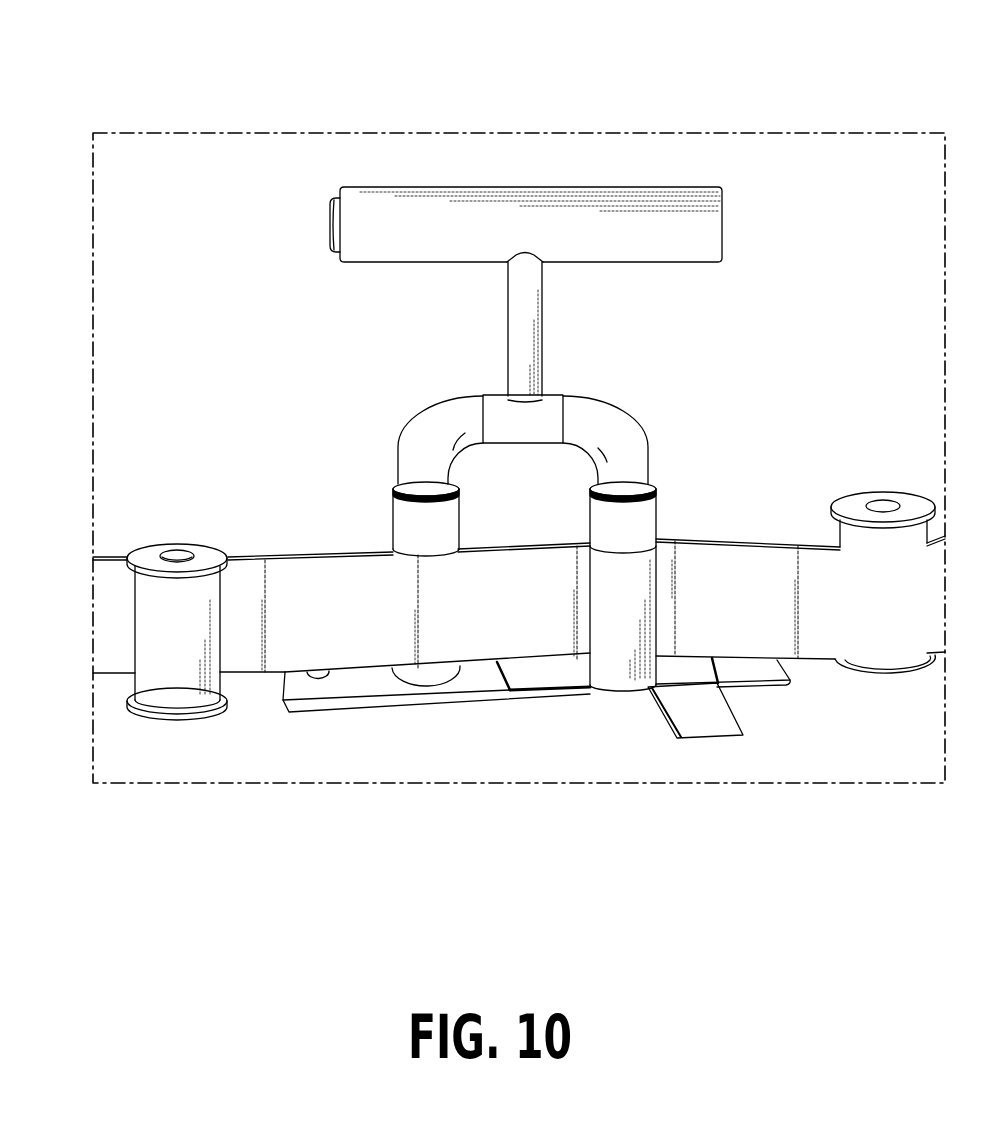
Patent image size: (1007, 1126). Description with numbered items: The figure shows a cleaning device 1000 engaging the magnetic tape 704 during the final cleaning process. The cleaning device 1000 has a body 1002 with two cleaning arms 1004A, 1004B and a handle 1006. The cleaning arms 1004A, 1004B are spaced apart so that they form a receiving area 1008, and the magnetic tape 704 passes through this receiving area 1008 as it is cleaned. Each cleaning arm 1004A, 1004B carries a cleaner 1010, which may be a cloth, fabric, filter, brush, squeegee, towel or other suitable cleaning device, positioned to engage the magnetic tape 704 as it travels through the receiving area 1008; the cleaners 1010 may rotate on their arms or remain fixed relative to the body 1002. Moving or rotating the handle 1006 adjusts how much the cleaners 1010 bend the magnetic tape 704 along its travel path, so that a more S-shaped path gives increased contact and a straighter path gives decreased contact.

The cleaning device 1000 is at (123, 45).
The body 1002 is at (332, 319).
The handle 1006 is at (352, 188).
The receiving area 1008 is at (503, 474).
The cleaning arm 1004A is at (398, 467).
The cleaning arm 1004B is at (633, 428).
The cleaner 1010 is at (440, 527).
The magnetic tape 704 is at (293, 657).